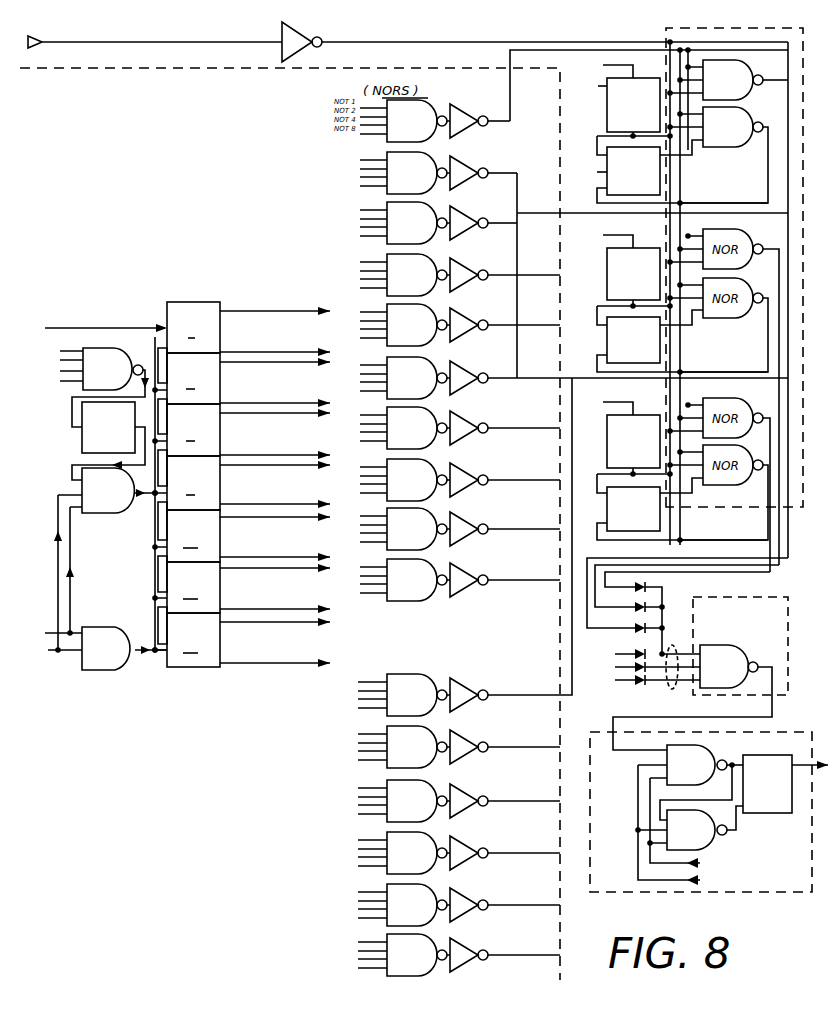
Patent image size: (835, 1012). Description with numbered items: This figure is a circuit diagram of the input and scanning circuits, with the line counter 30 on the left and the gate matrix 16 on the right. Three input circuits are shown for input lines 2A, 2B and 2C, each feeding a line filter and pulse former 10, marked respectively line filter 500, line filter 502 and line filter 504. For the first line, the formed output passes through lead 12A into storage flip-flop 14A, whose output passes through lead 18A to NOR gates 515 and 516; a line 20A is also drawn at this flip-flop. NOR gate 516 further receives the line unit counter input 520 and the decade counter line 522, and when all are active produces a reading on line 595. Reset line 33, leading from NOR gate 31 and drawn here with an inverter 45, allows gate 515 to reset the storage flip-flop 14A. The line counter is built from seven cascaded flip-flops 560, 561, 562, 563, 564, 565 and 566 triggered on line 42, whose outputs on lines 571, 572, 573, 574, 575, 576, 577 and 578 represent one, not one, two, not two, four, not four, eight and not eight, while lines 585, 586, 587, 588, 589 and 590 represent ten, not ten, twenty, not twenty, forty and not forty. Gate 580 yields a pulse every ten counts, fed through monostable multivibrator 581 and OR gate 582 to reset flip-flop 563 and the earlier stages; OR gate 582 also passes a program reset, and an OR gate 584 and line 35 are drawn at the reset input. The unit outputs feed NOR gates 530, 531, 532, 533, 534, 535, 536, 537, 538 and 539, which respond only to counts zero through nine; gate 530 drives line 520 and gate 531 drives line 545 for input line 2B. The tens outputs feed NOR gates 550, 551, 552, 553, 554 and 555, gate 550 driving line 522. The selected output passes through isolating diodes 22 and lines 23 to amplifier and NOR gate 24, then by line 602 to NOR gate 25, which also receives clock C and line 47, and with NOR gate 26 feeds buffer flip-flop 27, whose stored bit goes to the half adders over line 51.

The NOR gate 31 is at (155, 36).
The inverter 45 is at (283, 24).
The reset line 33 is at (326, 42).
The line counter 30 is at (150, 72).
The NOR gate 530 is at (421, 130).
The NOR gate 531 is at (421, 182).
The NOR gate 532 is at (421, 232).
The NOR gate 533 is at (421, 284).
The NOR gate 534 is at (421, 334).
The NOR gate 535 is at (421, 387).
The NOR gate 536 is at (421, 437).
The NOR gate 537 is at (421, 489).
The NOR gate 538 is at (421, 538).
The NOR gate 539 is at (421, 589).
The NOR gate 550 is at (421, 704).
The NOR gate 551 is at (421, 756).
The NOR gate 552 is at (421, 810).
The NOR gate 553 is at (421, 862).
The NOR gate 554 is at (421, 914).
The NOR gate 555 is at (421, 964).
The line unit counter input 520 is at (512, 118).
The line 545 is at (517, 200).
The decade counter line 522 is at (686, 193).
The gate matrix selector switch 16 is at (734, 293).
The line filter and pulse former 500 is at (607, 102).
The line filter and pulse former 502 is at (607, 272).
The line filter and pulse former 504 is at (607, 437).
The input line 2A is at (630, 66).
The input line 2B is at (630, 236).
The input line 2C is at (630, 403).
The line filter 10 is at (593, 79).
The lead 12A is at (623, 137).
The storage flip-flop 14A is at (616, 171).
The lead 18A is at (692, 155).
The line 20A is at (669, 199).
The NOR gate 516 is at (745, 66).
The NOR gate 515 is at (752, 114).
The line 595 is at (763, 83).
The isolating diodes 22 is at (650, 587).
The lines 23 is at (675, 658).
The amplifier and NOR gate 24 is at (748, 650).
The line 602 is at (775, 716).
The NOR gate 25 is at (713, 750).
The NOR gate 26 is at (710, 815).
The buffer flip-flop 27 is at (768, 752).
The line 51 is at (824, 764).
The line 47 is at (706, 825).
The flip-flop 560 is at (222, 303).
The flip-flop 561 is at (222, 379).
The flip-flop 562 is at (222, 431).
The flip-flop 563 is at (222, 485).
The flip-flop 564 is at (222, 537).
The flip-flop 565 is at (222, 590).
The flip-flop 566 is at (222, 641).
The output line 571 is at (285, 309).
The output line 572 is at (272, 351).
The output line 573 is at (266, 363).
The output line 574 is at (278, 402).
The output line 575 is at (269, 414).
The output line 576 is at (272, 454).
The output line 577 is at (269, 466).
The output line 578 is at (272, 504).
The output line 585 is at (266, 518).
The output line 586 is at (278, 556).
The output line 587 is at (266, 569).
The output line 588 is at (278, 608).
The output line 589 is at (266, 623).
The output line 590 is at (272, 662).
The trigger input line 42 is at (100, 326).
The gate 580 is at (116, 346).
The monostable multivibrator 581 is at (78, 438).
The OR gate 582 is at (90, 516).
The input line 35 is at (52, 630).
The OR gate 584 is at (88, 674).